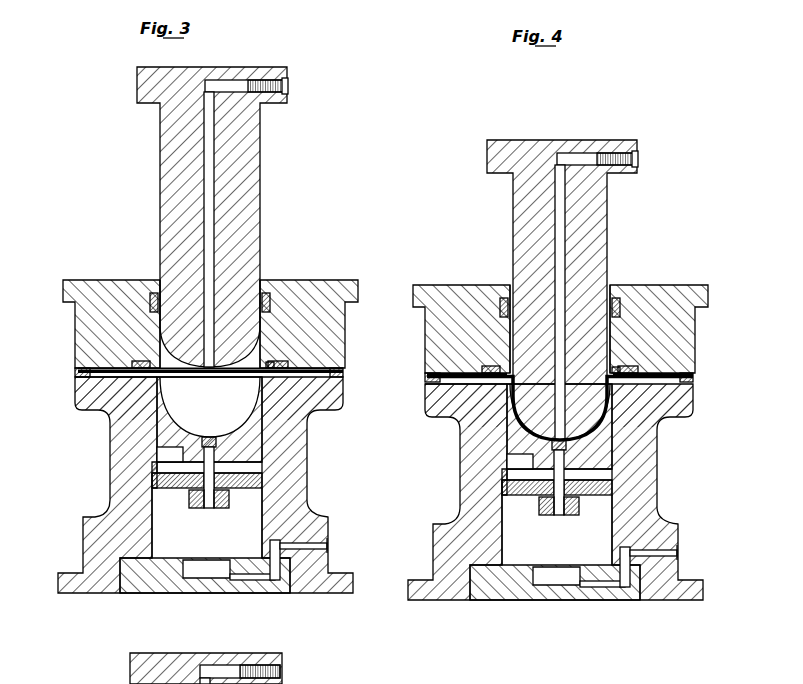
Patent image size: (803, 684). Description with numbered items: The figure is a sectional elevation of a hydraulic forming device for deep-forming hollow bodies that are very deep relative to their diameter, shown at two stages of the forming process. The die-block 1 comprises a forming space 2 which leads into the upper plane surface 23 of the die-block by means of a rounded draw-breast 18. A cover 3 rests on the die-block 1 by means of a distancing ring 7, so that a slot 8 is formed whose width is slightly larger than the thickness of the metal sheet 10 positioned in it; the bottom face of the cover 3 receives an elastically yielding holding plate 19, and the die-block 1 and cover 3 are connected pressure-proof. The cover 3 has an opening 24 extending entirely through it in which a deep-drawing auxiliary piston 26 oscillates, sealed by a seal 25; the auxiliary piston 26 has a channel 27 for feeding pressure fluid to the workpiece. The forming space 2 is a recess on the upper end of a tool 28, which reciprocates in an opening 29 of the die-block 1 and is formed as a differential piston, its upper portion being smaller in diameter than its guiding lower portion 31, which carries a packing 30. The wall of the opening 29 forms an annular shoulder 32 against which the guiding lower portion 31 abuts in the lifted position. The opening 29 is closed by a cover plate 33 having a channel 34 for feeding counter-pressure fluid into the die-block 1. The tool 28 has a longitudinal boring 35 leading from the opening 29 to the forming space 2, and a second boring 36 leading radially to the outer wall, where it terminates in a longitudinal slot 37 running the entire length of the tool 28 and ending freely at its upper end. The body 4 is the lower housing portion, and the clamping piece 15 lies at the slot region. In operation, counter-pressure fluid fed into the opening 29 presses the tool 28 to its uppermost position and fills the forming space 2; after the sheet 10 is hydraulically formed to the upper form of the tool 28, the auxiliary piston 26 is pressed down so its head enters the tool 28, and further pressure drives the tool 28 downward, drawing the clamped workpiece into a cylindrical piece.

In FIG. 4, the die-block 1 is at (627, 462).
In FIG. 3, the forming space 2 is at (313, 415).
In FIG. 3, the cover 3 is at (318, 328).
In FIG. 4, the cover 3 is at (670, 328).
In FIG. 3, the lower housing body 4 is at (277, 457).
In FIG. 3, the distancing ring 7 is at (78, 371).
In FIG. 4, the distancing ring 7 is at (694, 378).
In FIG. 3, the slot 8 is at (337, 366).
In FIG. 4, the slot 8 is at (684, 373).
In FIG. 3, the metal sheet 10 is at (217, 374).
In FIG. 4, the metal sheet 10 is at (467, 363).
In FIG. 3, the clamping piece 15 is at (278, 360).
In FIG. 4, the clamping piece 15 is at (620, 367).
In FIG. 3, the rounded draw-breast 18 is at (283, 374).
In FIG. 4, the rounded draw-breast 18 is at (616, 379).
In FIG. 3, the elastically yielding holding plate 19 is at (270, 361).
In FIG. 4, the elastically yielding holding plate 19 is at (613, 373).
In FIG. 4, the upper plane surface 23 is at (428, 398).
In FIG. 3, the opening 24 is at (165, 342).
In FIG. 4, the opening 24 is at (510, 337).
In FIG. 3, the seal 25 is at (152, 292).
In FIG. 4, the seal 25 is at (500, 295).
In FIG. 3, the deep-drawing auxiliary piston 26 is at (190, 187).
In FIG. 4, the deep-drawing auxiliary piston 26 is at (540, 193).
In FIG. 3, the channel 27 is at (224, 189).
In FIG. 4, the channel 27 is at (565, 193).
In FIG. 3, the tool 28 is at (237, 438).
In FIG. 4, the tool 28 is at (590, 443).
In FIG. 3, the opening 29 is at (237, 520).
In FIG. 4, the opening 29 is at (597, 515).
In FIG. 3, the packing 30 is at (257, 480).
In FIG. 4, the packing 30 is at (610, 485).
In FIG. 3, the guiding lower portion 31 is at (150, 465).
In FIG. 4, the guiding lower portion 31 is at (505, 482).
In FIG. 3, the annular shoulder 32 is at (160, 453).
In FIG. 4, the annular shoulder 32 is at (525, 467).
In FIG. 3, the cover plate 33 is at (152, 575).
In FIG. 4, the cover plate 33 is at (510, 578).
In FIG. 3, the channel 34 is at (255, 575).
In FIG. 4, the channel 34 is at (603, 580).
In FIG. 3, the longitudinal boring 35 is at (205, 481).
In FIG. 4, the longitudinal boring 35 is at (558, 517).
In FIG. 3, the second boring 36 is at (160, 432).
In FIG. 4, the second boring 36 is at (510, 474).
In FIG. 3, the longitudinal slot 37 is at (157, 401).
In FIG. 4, the longitudinal slot 37 is at (510, 428).